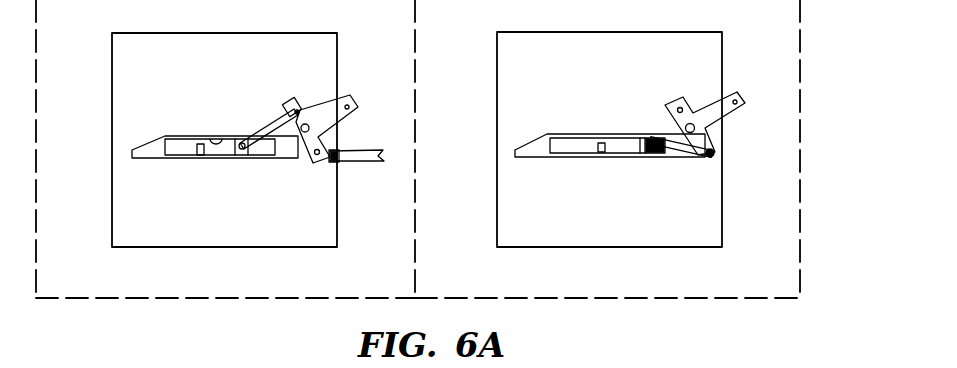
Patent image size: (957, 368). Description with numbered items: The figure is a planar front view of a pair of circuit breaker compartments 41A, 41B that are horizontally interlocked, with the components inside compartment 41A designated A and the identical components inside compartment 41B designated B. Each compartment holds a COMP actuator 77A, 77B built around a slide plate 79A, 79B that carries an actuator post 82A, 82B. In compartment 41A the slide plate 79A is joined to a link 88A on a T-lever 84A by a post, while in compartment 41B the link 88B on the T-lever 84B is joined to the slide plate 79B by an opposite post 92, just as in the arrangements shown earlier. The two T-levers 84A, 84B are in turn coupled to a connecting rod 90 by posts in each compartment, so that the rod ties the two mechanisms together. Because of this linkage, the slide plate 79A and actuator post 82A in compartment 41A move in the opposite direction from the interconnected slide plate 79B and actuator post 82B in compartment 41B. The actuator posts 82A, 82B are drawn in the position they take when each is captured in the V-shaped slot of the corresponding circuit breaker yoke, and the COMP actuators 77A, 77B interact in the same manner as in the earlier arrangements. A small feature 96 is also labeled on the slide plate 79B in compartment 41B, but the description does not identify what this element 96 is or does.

The circuit breaker compartment 41A is at (800, 85).
The circuit breaker compartment 41B is at (36, 222).
The COMP actuator 77A is at (648, 149).
The COMP actuator 77B is at (220, 145).
The slide plate 79A is at (567, 153).
The slide plate 79B is at (135, 153).
The actuator post 82A is at (600, 142).
The actuator post 82B is at (181, 150).
The T-lever 84A is at (698, 102).
The T-lever 84B is at (302, 104).
The link 88A is at (678, 157).
The link 88B is at (268, 126).
The connecting rod 90 is at (349, 148).
The opposite post 92 is at (321, 92).
The detent 96 is at (208, 137).